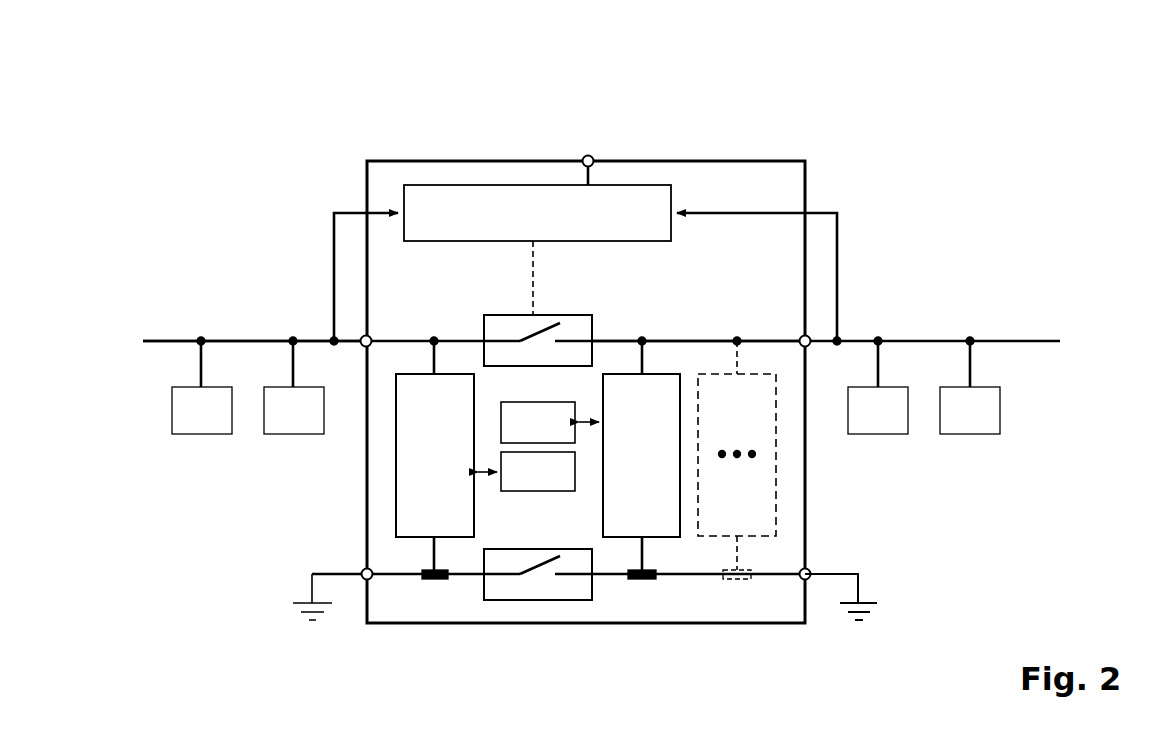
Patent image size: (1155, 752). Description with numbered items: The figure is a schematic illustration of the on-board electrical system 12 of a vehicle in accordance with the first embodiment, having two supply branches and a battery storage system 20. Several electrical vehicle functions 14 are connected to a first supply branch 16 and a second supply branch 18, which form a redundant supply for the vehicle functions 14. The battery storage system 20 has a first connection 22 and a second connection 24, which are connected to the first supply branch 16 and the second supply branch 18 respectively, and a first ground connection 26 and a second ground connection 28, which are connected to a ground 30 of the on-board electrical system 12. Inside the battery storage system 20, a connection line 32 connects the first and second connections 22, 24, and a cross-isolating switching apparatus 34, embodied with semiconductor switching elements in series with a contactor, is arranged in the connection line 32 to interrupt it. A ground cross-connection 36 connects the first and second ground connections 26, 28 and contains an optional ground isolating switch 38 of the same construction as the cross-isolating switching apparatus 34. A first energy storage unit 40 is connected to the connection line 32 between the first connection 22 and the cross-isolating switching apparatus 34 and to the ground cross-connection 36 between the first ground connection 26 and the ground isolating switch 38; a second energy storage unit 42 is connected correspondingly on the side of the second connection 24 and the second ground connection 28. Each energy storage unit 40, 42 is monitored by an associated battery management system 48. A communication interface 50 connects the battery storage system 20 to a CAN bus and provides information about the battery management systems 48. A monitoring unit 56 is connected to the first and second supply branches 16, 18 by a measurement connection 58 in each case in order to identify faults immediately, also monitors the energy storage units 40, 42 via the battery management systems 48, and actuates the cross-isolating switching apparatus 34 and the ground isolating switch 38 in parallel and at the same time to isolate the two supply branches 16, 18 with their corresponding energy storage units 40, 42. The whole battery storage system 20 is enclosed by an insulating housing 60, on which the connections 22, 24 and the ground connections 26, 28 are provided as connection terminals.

The on-board electrical system 12 is at (1003, 135).
The electrical vehicle functions 14 is at (200, 425).
The first supply branch 16 is at (1020, 341).
The second supply branch 18 is at (224, 341).
The battery storage system 20 is at (713, 135).
The first connection 22 is at (809, 337).
The second connection 24 is at (362, 337).
The first ground connection 26 is at (810, 582).
The second ground connection 28 is at (355, 580).
The ground 30 is at (860, 590).
The connection line 32 is at (692, 341).
The cross-isolating switching apparatus 34 is at (575, 325).
The ground cross-connection 36 is at (698, 578).
The ground isolating switch 38 is at (525, 592).
The first energy storage unit 40 is at (620, 520).
The second energy storage unit 42 is at (418, 520).
The battery management system 48 is at (540, 402).
The communication interface 50 is at (586, 155).
The monitoring unit 56 is at (488, 185).
The measurement connection 58 is at (332, 230).
The housing 60 is at (776, 161).